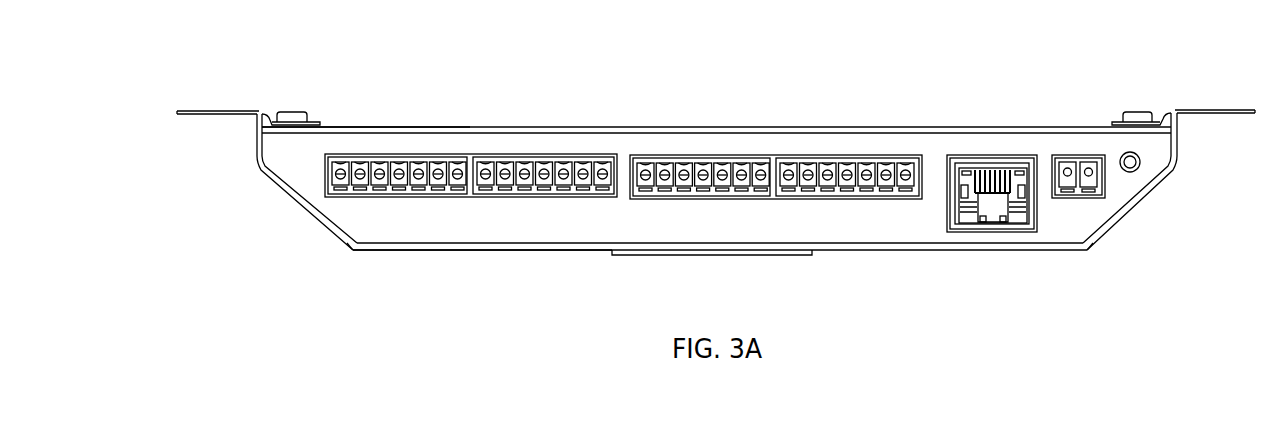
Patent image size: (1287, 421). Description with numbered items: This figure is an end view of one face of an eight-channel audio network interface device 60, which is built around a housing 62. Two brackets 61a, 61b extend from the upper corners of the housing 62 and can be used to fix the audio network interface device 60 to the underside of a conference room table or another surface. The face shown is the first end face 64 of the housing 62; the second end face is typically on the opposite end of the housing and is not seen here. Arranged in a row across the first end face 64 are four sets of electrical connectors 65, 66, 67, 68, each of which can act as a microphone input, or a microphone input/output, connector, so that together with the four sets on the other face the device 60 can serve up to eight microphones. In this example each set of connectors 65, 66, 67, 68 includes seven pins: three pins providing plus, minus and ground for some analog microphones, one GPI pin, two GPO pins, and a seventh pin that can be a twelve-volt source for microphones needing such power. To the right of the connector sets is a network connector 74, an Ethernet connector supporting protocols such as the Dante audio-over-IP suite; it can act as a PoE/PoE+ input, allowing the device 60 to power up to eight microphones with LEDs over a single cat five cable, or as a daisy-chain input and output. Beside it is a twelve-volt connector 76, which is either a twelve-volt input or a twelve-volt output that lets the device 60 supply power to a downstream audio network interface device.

The audio network interface device 60 is at (270, 212).
The bracket 61a is at (203, 111).
The bracket 61b is at (1198, 110).
The housing 62 is at (350, 253).
The first end face 64 is at (300, 143).
The electrical connector 65 is at (441, 156).
The electrical connector 66 is at (566, 156).
The electrical connector 67 is at (715, 155).
The electrical connector 68 is at (852, 155).
The network connector 74 is at (990, 223).
The 12V connector 76 is at (1093, 198).